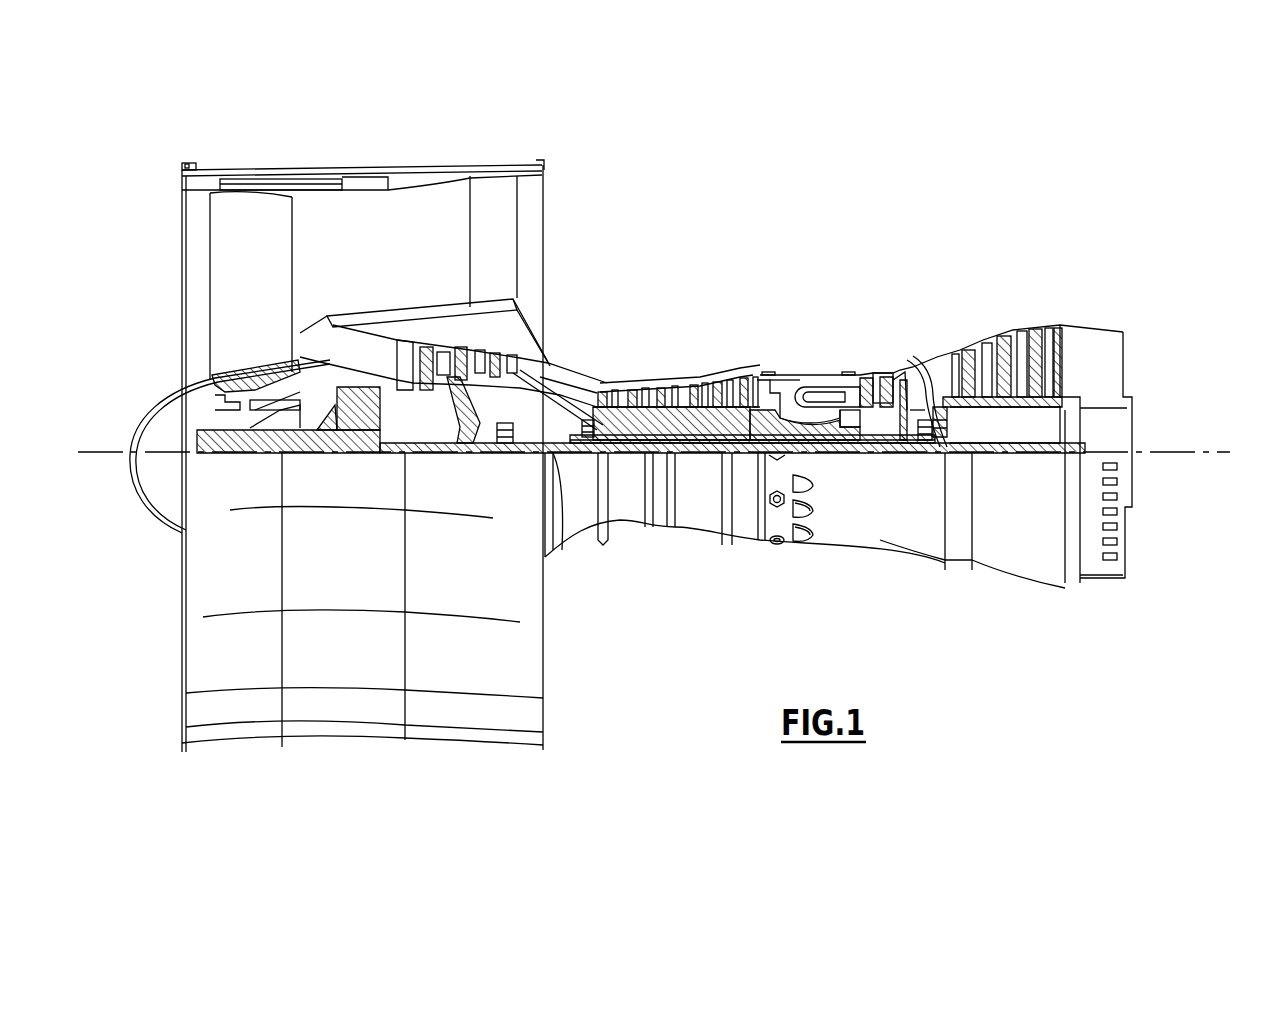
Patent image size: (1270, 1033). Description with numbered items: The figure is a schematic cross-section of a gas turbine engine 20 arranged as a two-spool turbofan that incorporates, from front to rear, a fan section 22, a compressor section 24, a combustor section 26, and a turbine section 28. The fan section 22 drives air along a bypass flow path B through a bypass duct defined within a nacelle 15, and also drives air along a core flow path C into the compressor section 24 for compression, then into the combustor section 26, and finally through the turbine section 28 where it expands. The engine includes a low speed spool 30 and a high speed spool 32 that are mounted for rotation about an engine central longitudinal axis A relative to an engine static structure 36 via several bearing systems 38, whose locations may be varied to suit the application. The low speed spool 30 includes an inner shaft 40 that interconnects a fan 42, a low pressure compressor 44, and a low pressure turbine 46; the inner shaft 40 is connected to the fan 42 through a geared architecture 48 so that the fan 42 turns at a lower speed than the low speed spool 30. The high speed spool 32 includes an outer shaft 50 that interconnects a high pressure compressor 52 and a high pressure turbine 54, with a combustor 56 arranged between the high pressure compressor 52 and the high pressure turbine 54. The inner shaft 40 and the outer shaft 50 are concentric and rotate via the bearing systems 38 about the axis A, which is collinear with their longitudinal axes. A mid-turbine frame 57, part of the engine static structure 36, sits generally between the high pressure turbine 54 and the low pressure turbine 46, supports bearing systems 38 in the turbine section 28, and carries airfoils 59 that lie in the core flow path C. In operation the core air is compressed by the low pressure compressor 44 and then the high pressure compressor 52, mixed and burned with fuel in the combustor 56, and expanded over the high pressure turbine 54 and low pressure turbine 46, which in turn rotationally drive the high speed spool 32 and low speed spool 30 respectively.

The nacelle 15 is at (365, 172).
The gas turbine engine 20 is at (825, 217).
The fan section 22 is at (292, 160).
The compressor section 24 is at (595, 358).
The combustor section 26 is at (817, 345).
The turbine section 28 is at (965, 308).
The low speed spool 30 is at (702, 462).
The high speed spool 32 is at (747, 377).
The engine static structure 36 is at (742, 551).
The bearing systems 38 is at (501, 453).
The inner shaft 40 is at (560, 455).
The fan 42 is at (265, 298).
The low pressure compressor 44 is at (463, 362).
The low pressure turbine 46 is at (1008, 347).
The geared architecture 48 is at (368, 437).
The outer shaft 50 is at (820, 437).
The high pressure compressor 52 is at (677, 420).
The high pressure turbine 54 is at (883, 370).
The combustor 56 is at (817, 397).
The mid-turbine frame 57 is at (928, 362).
The airfoils 59 is at (948, 405).
The engine central longitudinal axis A is at (1210, 452).
The bypass flow path B is at (318, 243).
The core flow path C is at (360, 350).